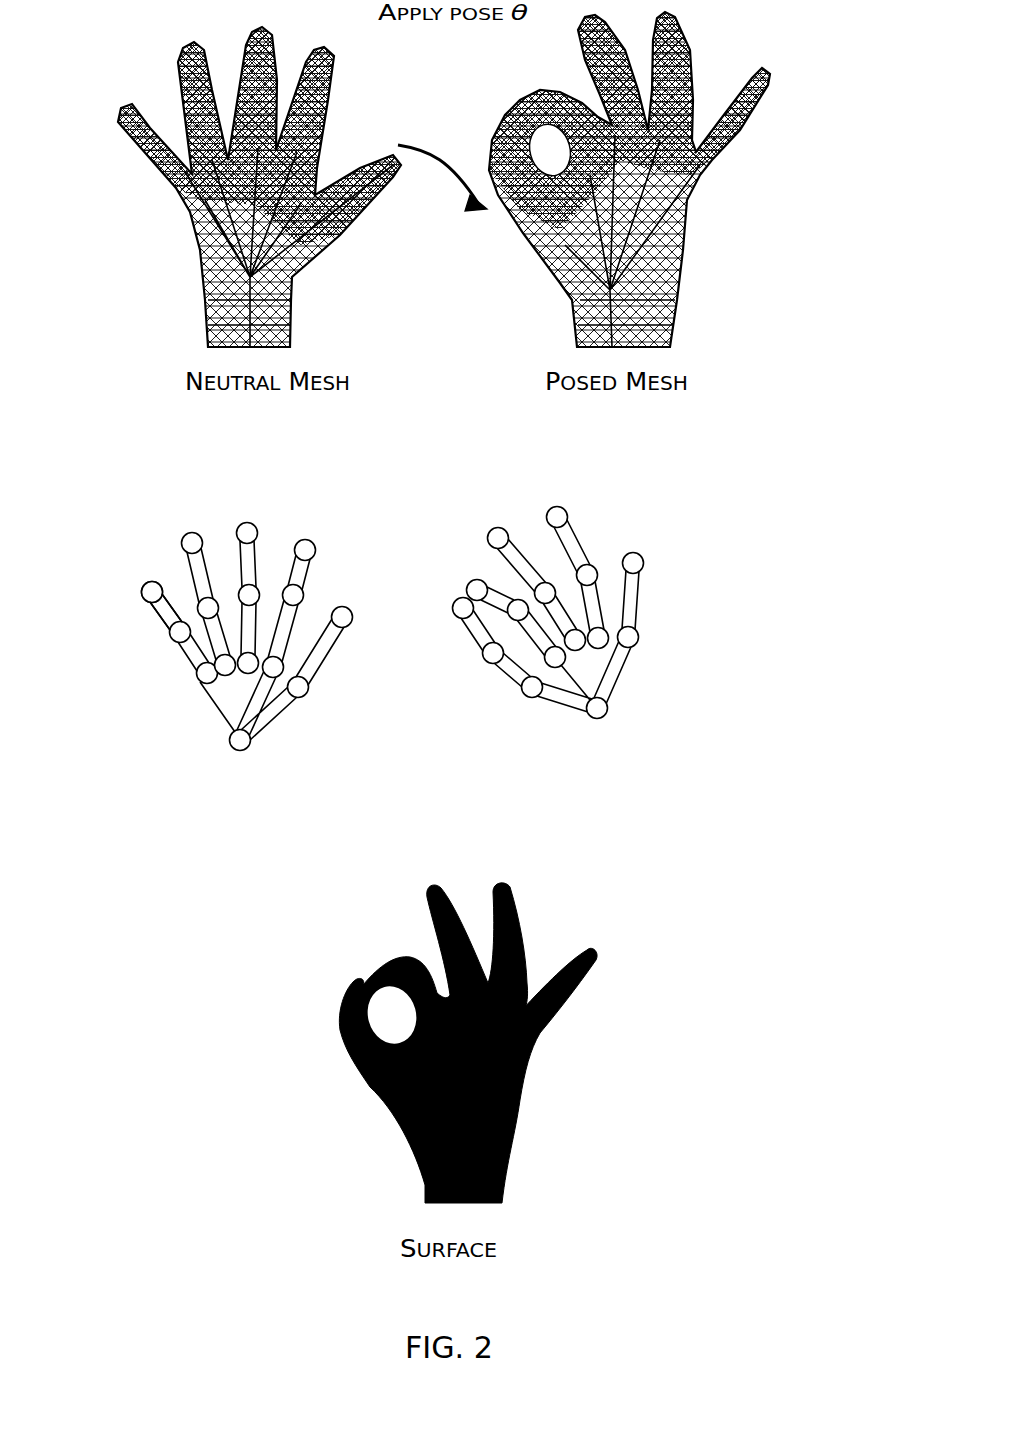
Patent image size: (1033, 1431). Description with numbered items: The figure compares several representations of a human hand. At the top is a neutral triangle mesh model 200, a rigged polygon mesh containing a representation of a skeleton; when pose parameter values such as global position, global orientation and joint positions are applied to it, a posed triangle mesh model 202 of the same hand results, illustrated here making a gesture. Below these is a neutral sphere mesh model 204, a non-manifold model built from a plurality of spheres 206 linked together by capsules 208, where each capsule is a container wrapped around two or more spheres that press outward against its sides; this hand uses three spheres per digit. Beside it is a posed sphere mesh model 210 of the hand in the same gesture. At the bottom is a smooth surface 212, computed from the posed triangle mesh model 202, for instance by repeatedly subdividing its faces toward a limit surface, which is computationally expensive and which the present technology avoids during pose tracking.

The neutral triangle mesh model 200 is at (295, 315).
The posed triangle mesh model 202 is at (680, 315).
The neutral sphere mesh model 204 is at (186, 700).
The sphere 206 is at (149, 598).
The capsule 208 is at (166, 618).
The posed sphere mesh model 210 is at (650, 622).
The smooth surface 212 is at (518, 1180).